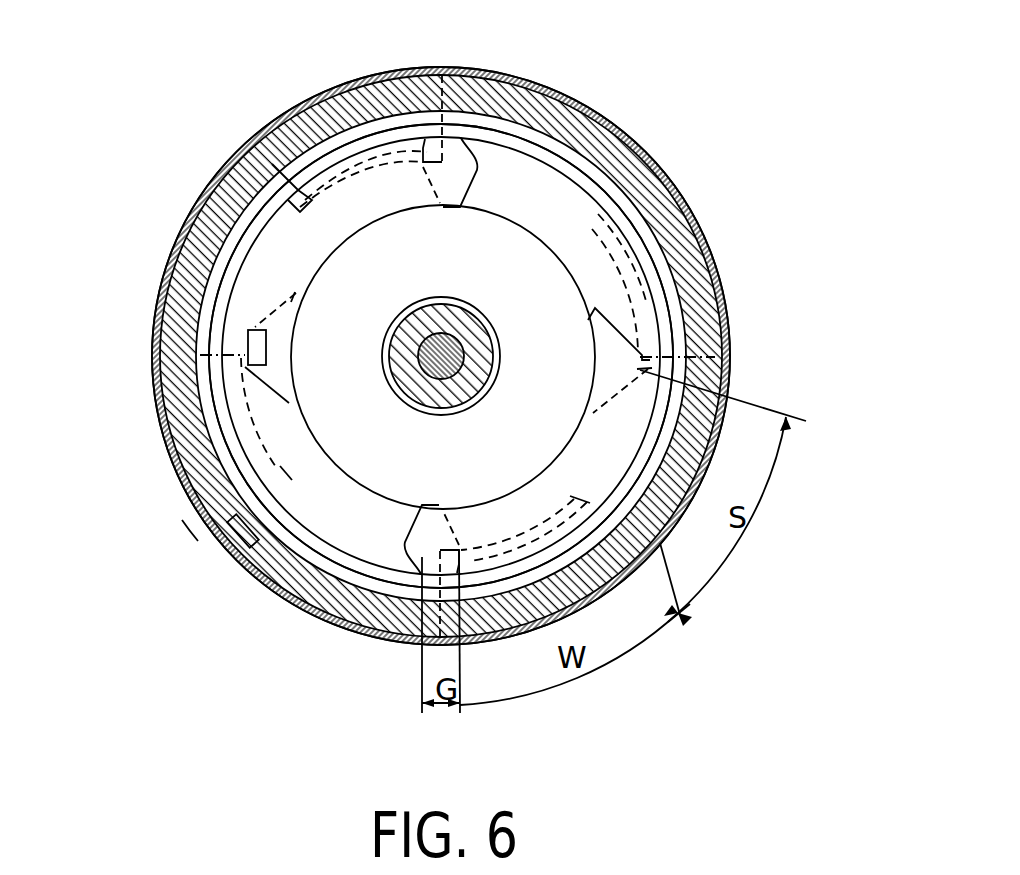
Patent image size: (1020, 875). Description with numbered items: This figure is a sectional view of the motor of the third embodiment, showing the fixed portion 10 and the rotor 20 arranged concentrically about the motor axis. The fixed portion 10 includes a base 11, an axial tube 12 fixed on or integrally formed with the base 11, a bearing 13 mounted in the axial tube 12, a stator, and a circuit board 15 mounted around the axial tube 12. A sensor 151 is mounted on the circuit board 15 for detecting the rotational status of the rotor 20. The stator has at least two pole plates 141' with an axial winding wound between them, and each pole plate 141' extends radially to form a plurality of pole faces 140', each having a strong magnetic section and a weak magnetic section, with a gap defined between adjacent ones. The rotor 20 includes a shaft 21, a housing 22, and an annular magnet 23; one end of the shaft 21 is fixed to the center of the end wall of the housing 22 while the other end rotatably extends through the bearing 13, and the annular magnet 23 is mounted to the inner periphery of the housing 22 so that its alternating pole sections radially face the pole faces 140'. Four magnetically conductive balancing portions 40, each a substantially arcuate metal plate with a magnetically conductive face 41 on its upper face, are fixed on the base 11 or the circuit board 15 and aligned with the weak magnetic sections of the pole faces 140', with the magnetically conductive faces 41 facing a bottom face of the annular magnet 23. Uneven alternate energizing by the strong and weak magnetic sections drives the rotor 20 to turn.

The fixed portion 10 is at (889, 296).
The base 11 is at (678, 344).
The axial tube 12 is at (468, 305).
The bearing 13 is at (473, 337).
The circuit board 15 is at (678, 344).
The rotor 20 is at (232, 150).
The shaft 21 is at (460, 358).
The housing 22 is at (662, 545).
The annular magnet 23 is at (663, 505).
The magnetically conductive balancing portion 40 is at (186, 478).
The magnetically conductive face 41 is at (235, 558).
The pole face 140' is at (712, 257).
The pole plate 141' is at (700, 264).
The sensor 151 is at (255, 347).